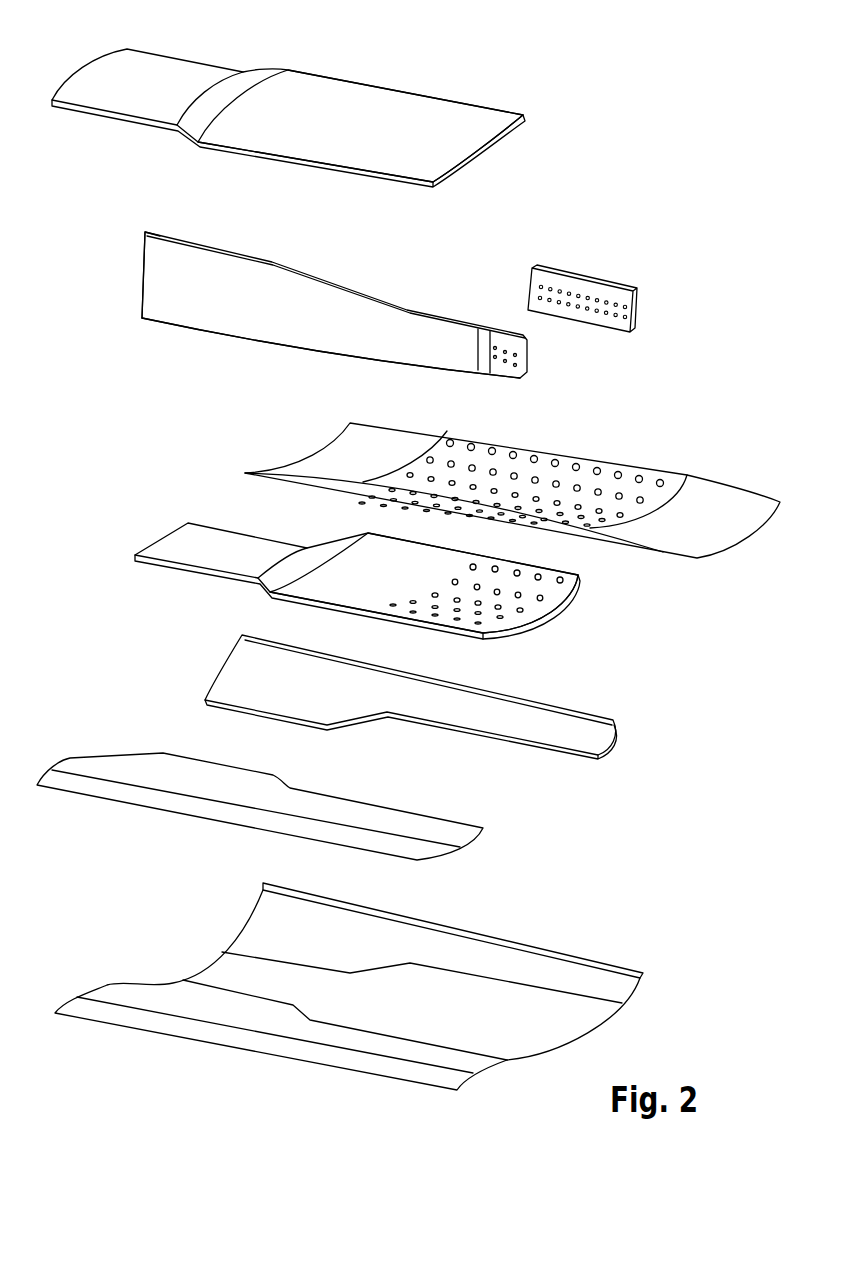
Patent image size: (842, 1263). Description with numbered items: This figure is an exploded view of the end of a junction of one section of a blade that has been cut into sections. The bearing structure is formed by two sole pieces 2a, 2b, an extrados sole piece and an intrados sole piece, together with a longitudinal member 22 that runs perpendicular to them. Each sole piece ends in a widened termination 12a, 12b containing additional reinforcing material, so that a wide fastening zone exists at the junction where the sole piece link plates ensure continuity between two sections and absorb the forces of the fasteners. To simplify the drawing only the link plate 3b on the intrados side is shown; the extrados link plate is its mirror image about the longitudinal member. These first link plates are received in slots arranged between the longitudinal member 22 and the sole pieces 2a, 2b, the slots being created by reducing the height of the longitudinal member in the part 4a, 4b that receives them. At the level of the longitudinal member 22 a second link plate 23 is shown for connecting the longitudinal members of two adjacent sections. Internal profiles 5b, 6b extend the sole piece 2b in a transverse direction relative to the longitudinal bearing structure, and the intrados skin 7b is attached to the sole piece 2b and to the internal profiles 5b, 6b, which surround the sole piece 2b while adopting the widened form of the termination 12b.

The sole piece 2a is at (157, 88).
The termination 12a is at (327, 100).
The part receiving the first link plates 4a is at (248, 247).
The part receiving the first link plates 4b is at (297, 348).
The longitudinal member 22 is at (177, 272).
The second link plate 23 is at (600, 282).
The link plate 3b is at (635, 475).
The sole piece 2b is at (178, 550).
The termination 12b is at (525, 605).
The internal profile 6b is at (580, 728).
The internal profile 5b is at (440, 835).
The intrados skin 7b is at (573, 1027).